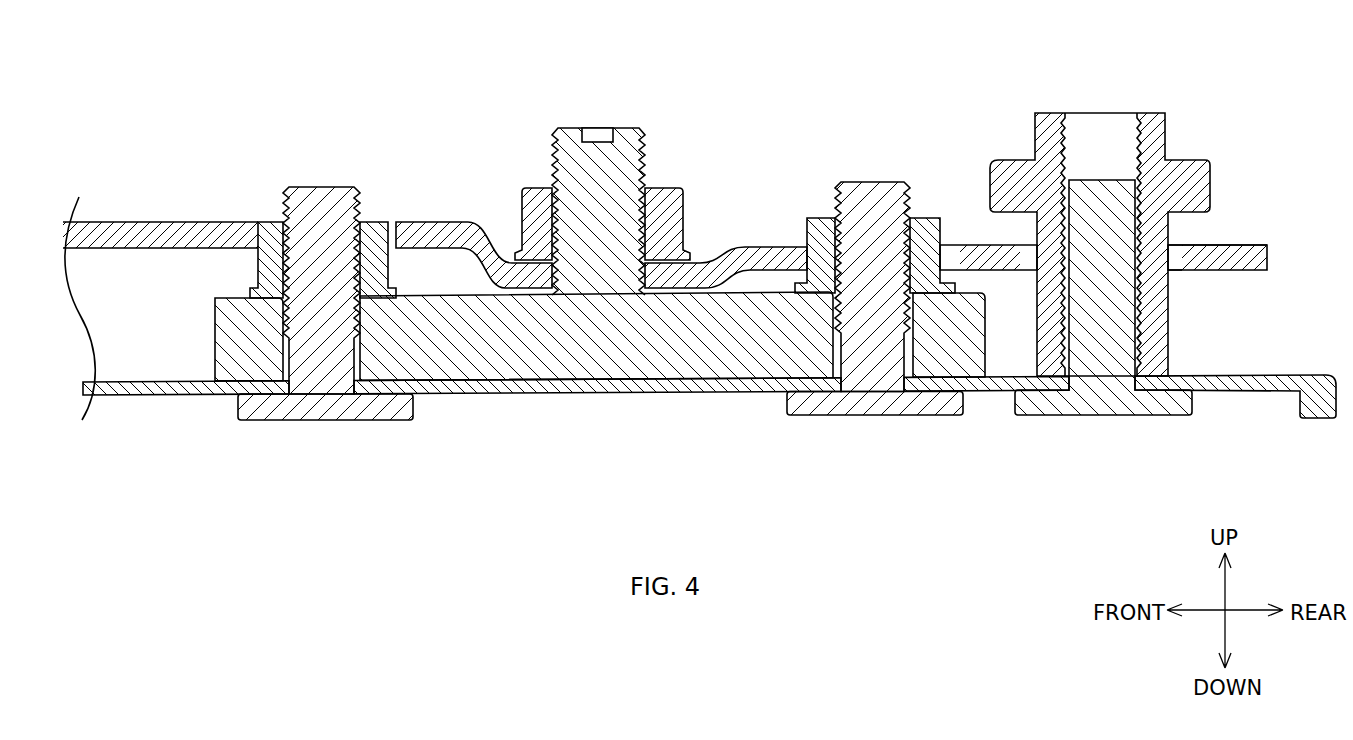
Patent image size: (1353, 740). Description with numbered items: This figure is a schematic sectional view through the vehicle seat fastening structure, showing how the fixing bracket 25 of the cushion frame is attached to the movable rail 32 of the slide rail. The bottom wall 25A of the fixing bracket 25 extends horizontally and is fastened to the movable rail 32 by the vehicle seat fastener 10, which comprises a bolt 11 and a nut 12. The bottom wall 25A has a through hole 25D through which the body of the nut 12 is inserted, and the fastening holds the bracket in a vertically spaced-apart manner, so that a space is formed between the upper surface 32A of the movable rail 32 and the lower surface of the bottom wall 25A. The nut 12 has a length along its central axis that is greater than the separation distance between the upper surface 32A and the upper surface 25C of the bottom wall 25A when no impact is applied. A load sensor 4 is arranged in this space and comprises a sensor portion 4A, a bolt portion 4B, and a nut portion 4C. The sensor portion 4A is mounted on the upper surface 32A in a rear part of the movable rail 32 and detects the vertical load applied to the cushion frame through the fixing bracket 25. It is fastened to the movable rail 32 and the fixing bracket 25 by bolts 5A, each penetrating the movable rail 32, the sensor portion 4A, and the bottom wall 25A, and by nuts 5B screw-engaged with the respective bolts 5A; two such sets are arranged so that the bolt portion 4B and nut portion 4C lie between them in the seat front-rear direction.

The load sensor 4 is at (600, 279).
The sensor portion 4A is at (593, 330).
The bolt portion 4B is at (622, 147).
The nut portion 4C is at (680, 196).
The bolt 5A is at (328, 203).
The nut 5B is at (373, 238).
The vehicle seat fastener 10 is at (708, 259).
The bolt 11 is at (1098, 405).
The nut 12 is at (1172, 178).
The fixing bracket 25 is at (1260, 245).
The bottom wall 25A is at (1238, 252).
The upper surface 25C is at (1207, 245).
The through hole 25D is at (1177, 262).
The movable rail 32 is at (709, 415).
The upper surface 32A is at (1192, 375).